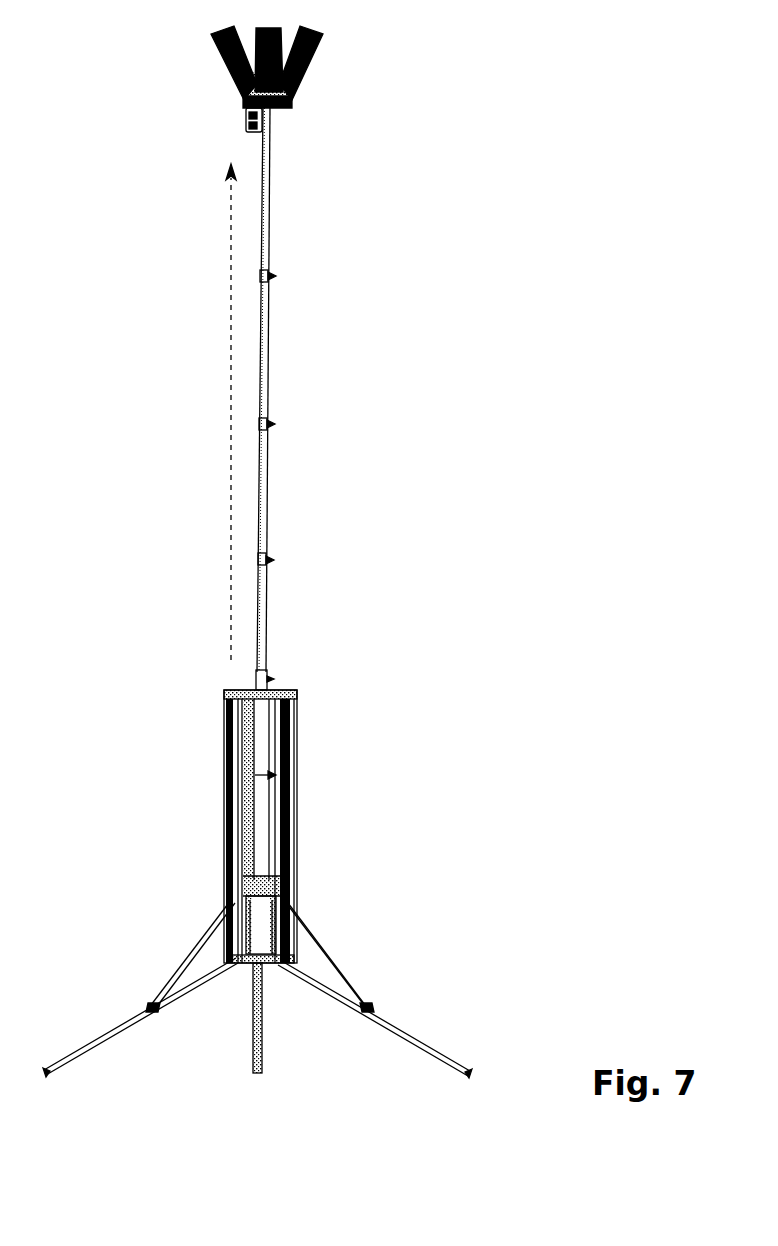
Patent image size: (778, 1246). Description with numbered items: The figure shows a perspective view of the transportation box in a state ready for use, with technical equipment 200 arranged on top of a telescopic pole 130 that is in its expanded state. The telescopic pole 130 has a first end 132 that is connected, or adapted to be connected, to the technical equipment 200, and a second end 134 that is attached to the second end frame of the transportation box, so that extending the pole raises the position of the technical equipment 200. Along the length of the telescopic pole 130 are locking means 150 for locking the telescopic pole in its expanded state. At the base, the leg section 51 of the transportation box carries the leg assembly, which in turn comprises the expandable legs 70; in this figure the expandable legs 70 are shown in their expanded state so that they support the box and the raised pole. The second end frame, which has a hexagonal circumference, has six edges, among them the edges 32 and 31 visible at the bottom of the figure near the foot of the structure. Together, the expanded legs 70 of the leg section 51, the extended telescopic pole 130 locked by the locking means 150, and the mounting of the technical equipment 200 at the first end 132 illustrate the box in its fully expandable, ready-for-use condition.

The light head / lamp assembly 200 is at (210, 33).
The first end 132 is at (265, 127).
The telescopic pole 130 is at (261, 345).
The locking means 150 is at (270, 276).
The leg section 51 is at (293, 797).
The second end 134 is at (257, 923).
The expandable leg 70 is at (120, 1023).
The edge 32 is at (248, 963).
The edge 31 is at (280, 965).